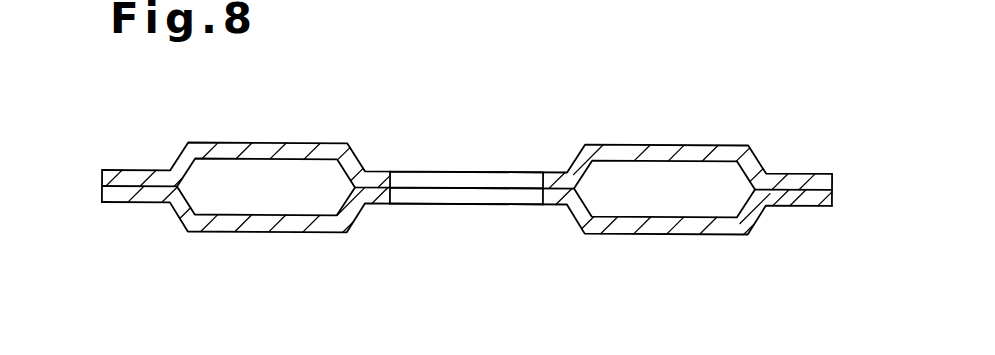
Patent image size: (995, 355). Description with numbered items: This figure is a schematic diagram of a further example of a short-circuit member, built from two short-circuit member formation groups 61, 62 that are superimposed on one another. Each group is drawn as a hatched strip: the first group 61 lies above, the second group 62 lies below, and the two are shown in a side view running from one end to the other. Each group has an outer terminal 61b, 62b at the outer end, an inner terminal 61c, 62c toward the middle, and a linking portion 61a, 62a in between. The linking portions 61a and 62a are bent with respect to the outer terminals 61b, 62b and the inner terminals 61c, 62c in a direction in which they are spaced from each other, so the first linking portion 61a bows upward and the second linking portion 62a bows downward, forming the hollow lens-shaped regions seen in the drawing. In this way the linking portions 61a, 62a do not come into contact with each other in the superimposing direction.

The short-circuit member formation group 61 is at (96, 177).
The short-circuit member formation group 62 is at (96, 196).
The linking portion 61a is at (262, 148).
The linking portion 62a is at (283, 227).
The outer terminal 61b is at (130, 172).
The outer terminal 62b is at (149, 198).
The inner terminal 61c is at (373, 172).
The inner terminal 62c is at (383, 205).